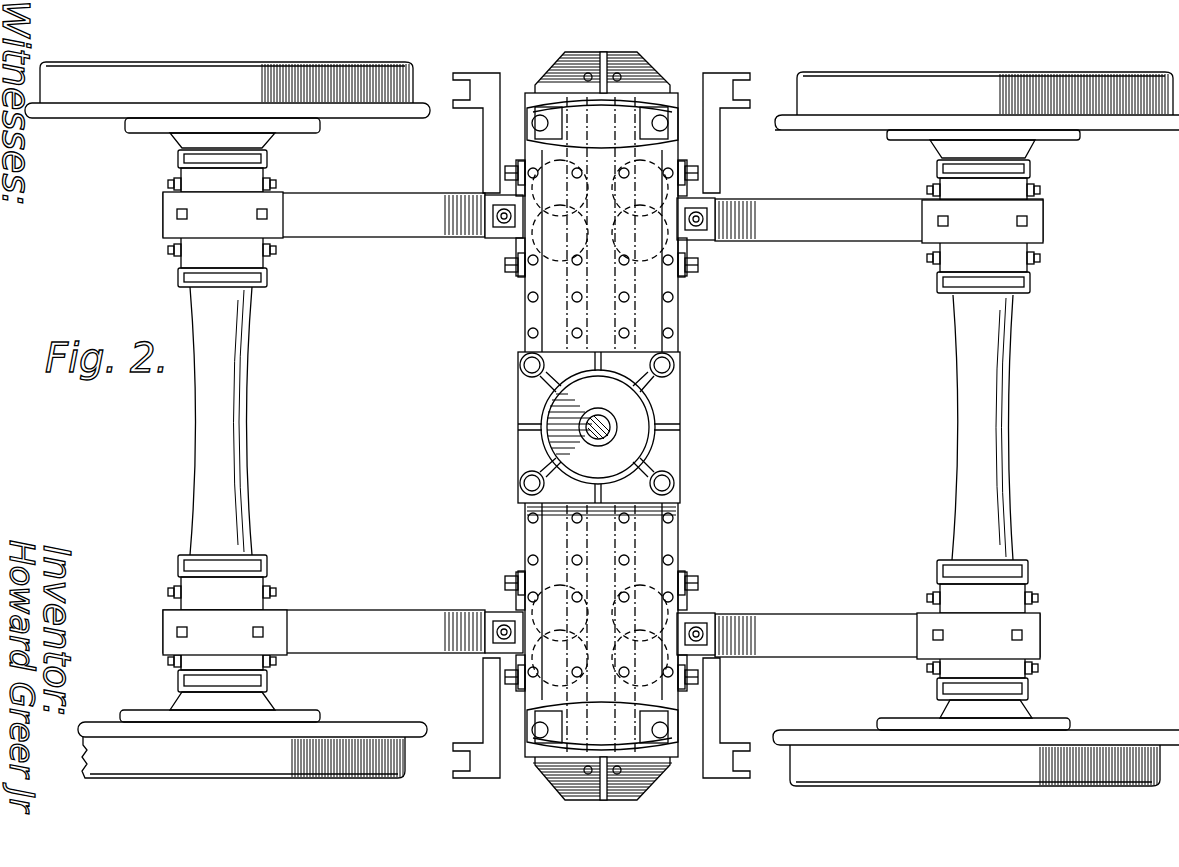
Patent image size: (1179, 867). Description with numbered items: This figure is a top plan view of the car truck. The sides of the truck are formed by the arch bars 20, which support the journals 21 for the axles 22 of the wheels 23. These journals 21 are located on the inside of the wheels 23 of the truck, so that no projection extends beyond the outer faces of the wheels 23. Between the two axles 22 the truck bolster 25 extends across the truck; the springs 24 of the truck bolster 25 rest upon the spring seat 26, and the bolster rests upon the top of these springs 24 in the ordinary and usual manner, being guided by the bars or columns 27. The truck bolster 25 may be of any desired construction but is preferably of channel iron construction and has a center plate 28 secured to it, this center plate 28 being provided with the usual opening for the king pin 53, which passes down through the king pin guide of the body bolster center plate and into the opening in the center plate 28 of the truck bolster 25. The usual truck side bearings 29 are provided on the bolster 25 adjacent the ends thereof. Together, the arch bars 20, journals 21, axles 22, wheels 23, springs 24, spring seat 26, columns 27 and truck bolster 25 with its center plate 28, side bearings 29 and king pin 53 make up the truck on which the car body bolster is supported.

The arch bars 20 is at (398, 206).
The journals 21 is at (245, 256).
The axles 22 is at (232, 430).
The wheels 23 is at (396, 110).
The springs 24 is at (608, 160).
The truck bolster 25 is at (660, 310).
The spring seat 26 is at (573, 68).
The bars or columns 27 is at (484, 157).
The center plate 28 is at (662, 478).
The truck side bearings 29 is at (605, 105).
The king pin 53 is at (606, 425).